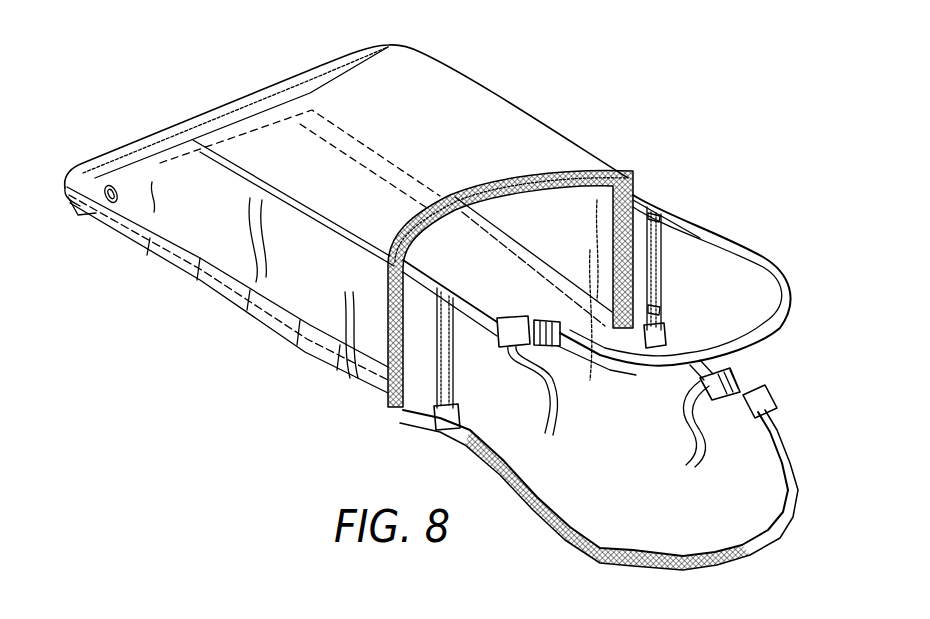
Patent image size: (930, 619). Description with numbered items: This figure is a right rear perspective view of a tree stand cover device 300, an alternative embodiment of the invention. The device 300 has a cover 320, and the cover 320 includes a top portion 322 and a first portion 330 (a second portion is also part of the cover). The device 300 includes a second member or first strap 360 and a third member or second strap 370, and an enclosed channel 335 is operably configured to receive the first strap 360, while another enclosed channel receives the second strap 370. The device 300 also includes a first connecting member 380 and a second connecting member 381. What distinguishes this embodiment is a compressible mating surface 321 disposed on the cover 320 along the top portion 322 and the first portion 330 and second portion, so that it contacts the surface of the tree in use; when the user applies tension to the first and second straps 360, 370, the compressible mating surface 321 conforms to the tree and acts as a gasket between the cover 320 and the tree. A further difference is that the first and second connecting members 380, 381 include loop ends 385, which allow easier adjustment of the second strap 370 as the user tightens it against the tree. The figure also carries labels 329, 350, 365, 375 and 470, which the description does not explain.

The tree stand cover device 300 is at (655, 101).
The cover 320 is at (466, 66).
The compressible mating surface 321 is at (497, 187).
The top portion 322 is at (500, 119).
The edge binding 329 is at (147, 207).
The first portion 330 is at (235, 230).
The enclosed channel 335 is at (78, 203).
The canopy rim 350 is at (180, 116).
The first strap 360 is at (743, 545).
The side buckle 365 is at (767, 384).
The second strap 370 is at (787, 303).
The center buckle 375 is at (520, 352).
The first connecting member 380 is at (653, 243).
The second connecting member 381 is at (433, 388).
The loop ends 385 is at (435, 421).
The sheet reference 470 is at (71, 606).